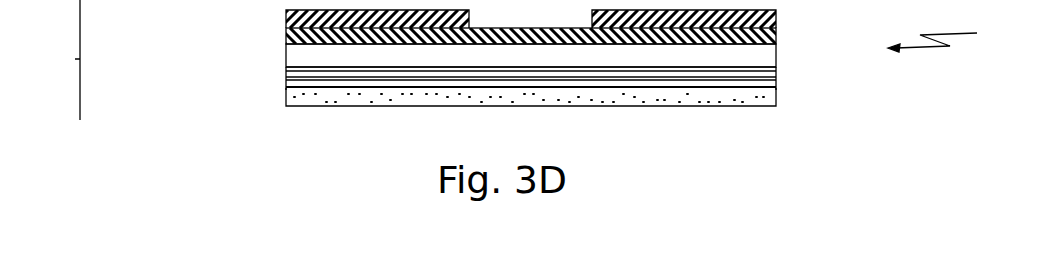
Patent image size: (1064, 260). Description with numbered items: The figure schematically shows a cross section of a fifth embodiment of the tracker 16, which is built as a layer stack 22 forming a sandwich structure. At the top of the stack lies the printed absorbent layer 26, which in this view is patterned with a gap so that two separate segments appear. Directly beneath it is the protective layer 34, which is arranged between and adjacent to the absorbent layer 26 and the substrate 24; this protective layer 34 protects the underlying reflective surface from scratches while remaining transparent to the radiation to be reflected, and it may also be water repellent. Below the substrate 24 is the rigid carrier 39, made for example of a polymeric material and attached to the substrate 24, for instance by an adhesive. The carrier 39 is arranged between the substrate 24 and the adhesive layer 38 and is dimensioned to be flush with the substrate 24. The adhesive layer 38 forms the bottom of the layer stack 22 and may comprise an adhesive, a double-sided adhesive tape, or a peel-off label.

The tracker 16 is at (963, 37).
The layer stack 22 is at (50, 60).
The substrate 24 is at (286, 55).
The printed absorbent layer 26 is at (286, 14).
The protective layer 34 is at (286, 33).
The adhesive layer 38 is at (286, 105).
The rigid carrier 39 is at (286, 82).